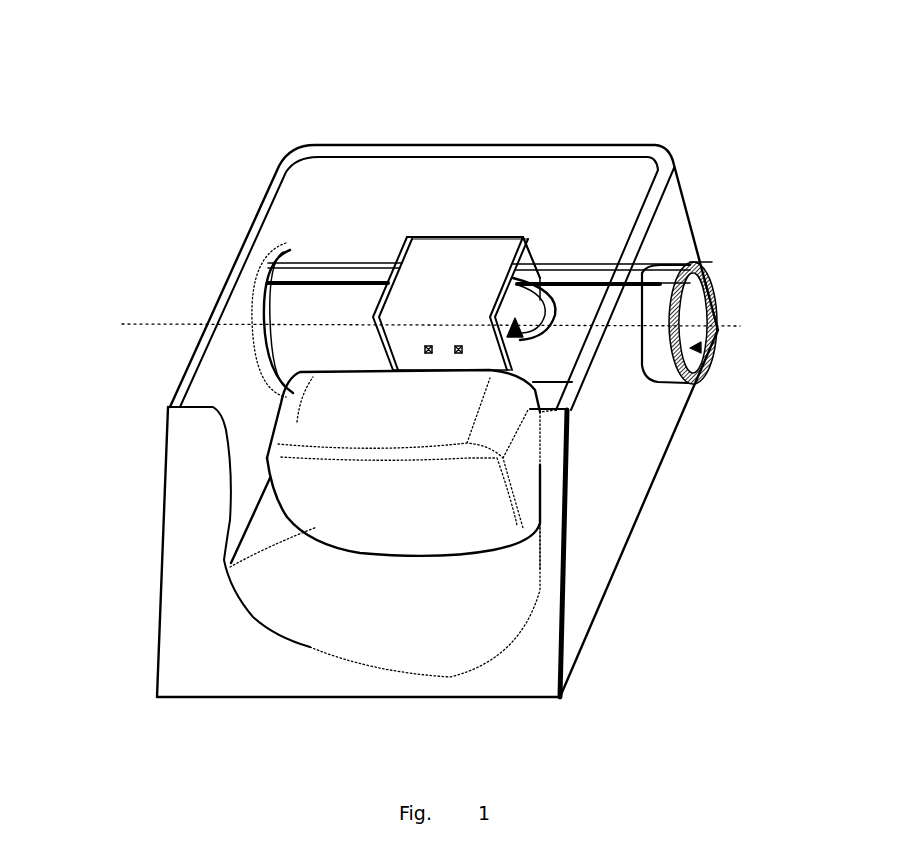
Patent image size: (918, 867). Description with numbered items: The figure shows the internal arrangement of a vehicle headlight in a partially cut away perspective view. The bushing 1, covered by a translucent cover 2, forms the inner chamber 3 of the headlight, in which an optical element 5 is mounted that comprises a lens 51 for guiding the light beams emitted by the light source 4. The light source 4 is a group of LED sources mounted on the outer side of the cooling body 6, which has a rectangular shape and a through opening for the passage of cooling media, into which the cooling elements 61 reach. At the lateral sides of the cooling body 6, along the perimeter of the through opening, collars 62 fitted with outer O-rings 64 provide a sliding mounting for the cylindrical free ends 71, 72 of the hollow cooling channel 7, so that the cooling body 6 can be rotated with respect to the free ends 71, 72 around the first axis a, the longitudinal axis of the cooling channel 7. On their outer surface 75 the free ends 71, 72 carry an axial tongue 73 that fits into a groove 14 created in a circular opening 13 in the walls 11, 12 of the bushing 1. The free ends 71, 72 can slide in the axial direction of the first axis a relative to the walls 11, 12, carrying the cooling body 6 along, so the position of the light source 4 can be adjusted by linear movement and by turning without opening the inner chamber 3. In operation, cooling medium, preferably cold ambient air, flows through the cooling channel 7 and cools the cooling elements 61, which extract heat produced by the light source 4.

The bushing 1 is at (189, 368).
The wall of the bushing 11 is at (240, 335).
The translucent cover 2 is at (228, 452).
The inner chamber 3 is at (271, 600).
The light source 4 is at (540, 413).
The optical element 5 is at (272, 516).
The lens 51 is at (240, 570).
The cooling body 6 is at (463, 263).
The cooling elements 61 is at (540, 327).
The collars 62 is at (560, 300).
The outer O-rings 64 is at (548, 267).
The cooling channel 7 is at (600, 290).
The free end of the cooling channel 71 is at (350, 293).
The free end of the cooling channel 72 is at (570, 297).
The axial tongue 73 is at (677, 267).
The outer surface 75 is at (700, 261).
The wall of the bushing 12 is at (540, 383).
The circular opening 13 is at (540, 297).
The groove 14 is at (610, 272).
The first axis a is at (740, 326).